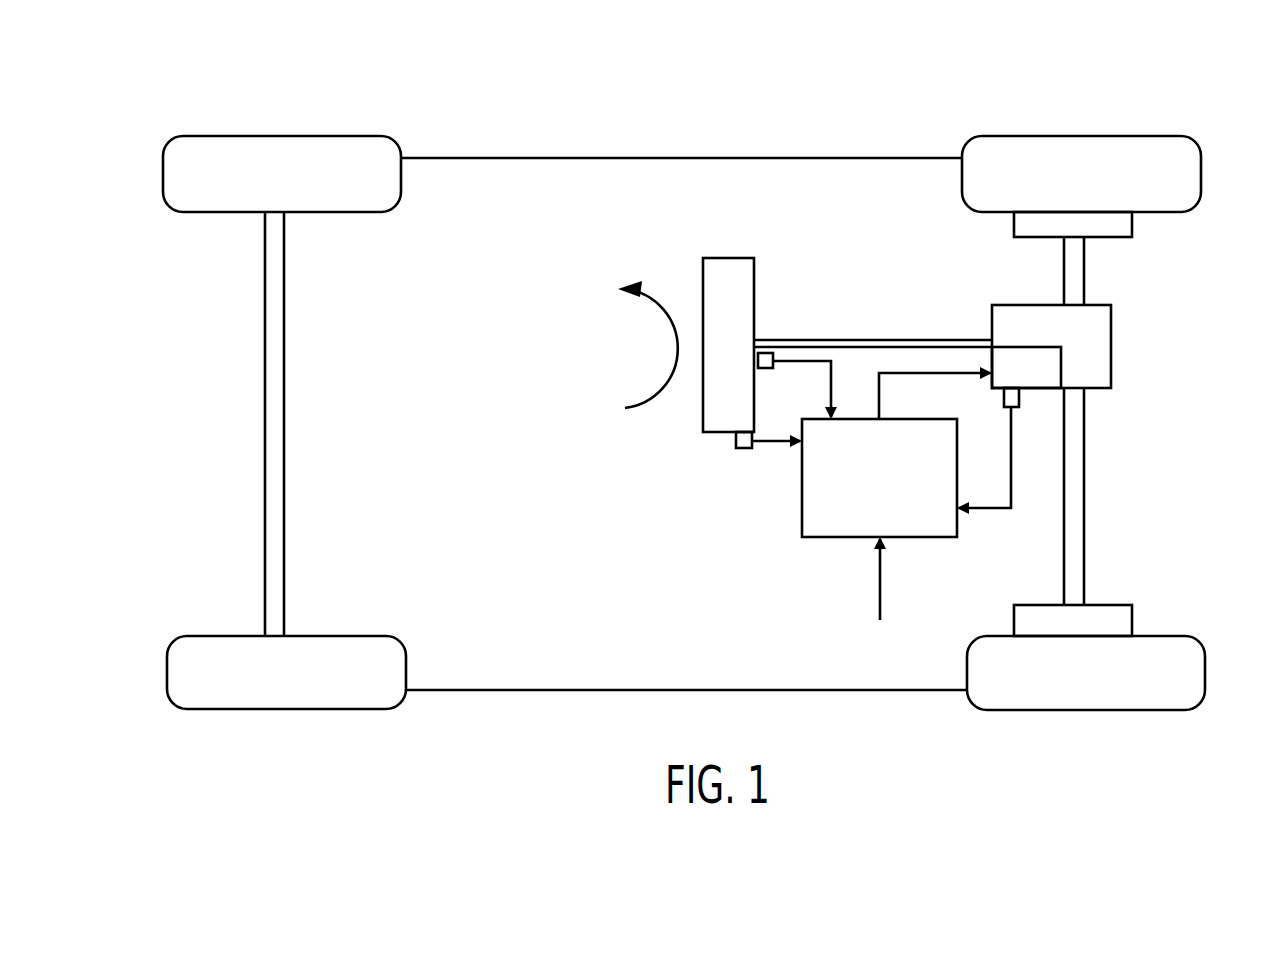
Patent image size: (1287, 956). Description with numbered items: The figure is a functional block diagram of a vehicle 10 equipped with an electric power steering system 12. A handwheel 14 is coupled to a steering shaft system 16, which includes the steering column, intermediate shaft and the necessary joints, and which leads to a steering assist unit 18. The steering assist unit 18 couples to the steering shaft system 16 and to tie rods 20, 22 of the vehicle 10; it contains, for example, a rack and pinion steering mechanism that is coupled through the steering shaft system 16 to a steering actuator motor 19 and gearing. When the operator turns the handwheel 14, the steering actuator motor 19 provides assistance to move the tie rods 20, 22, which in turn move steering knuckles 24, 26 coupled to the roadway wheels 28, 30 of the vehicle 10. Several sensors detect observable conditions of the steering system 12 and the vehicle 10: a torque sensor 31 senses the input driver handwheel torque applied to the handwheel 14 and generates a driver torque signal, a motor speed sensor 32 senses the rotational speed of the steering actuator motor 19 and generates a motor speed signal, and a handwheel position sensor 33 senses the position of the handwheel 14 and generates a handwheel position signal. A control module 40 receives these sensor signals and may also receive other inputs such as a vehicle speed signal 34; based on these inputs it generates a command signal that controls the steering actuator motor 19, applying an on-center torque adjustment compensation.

The vehicle 10 is at (795, 104).
The steering system 12 is at (888, 262).
The handwheel 14 is at (730, 258).
The steering shaft system 16 is at (828, 338).
The steering assist unit 18 is at (1111, 345).
The steering actuator motor 19 is at (1042, 381).
The tie rod 20 is at (1083, 268).
The tie rod 22 is at (1085, 487).
The steering knuckle 24 is at (1132, 222).
The steering knuckle 26 is at (1132, 616).
The roadway wheel 28 is at (1085, 136).
The roadway wheel 30 is at (1205, 670).
The torque sensor 31 is at (766, 369).
The motor speed sensor 32 is at (1015, 409).
The handwheel position sensor 33 is at (742, 449).
The vehicle speed signal 34 is at (878, 598).
The control module 40 is at (825, 538).